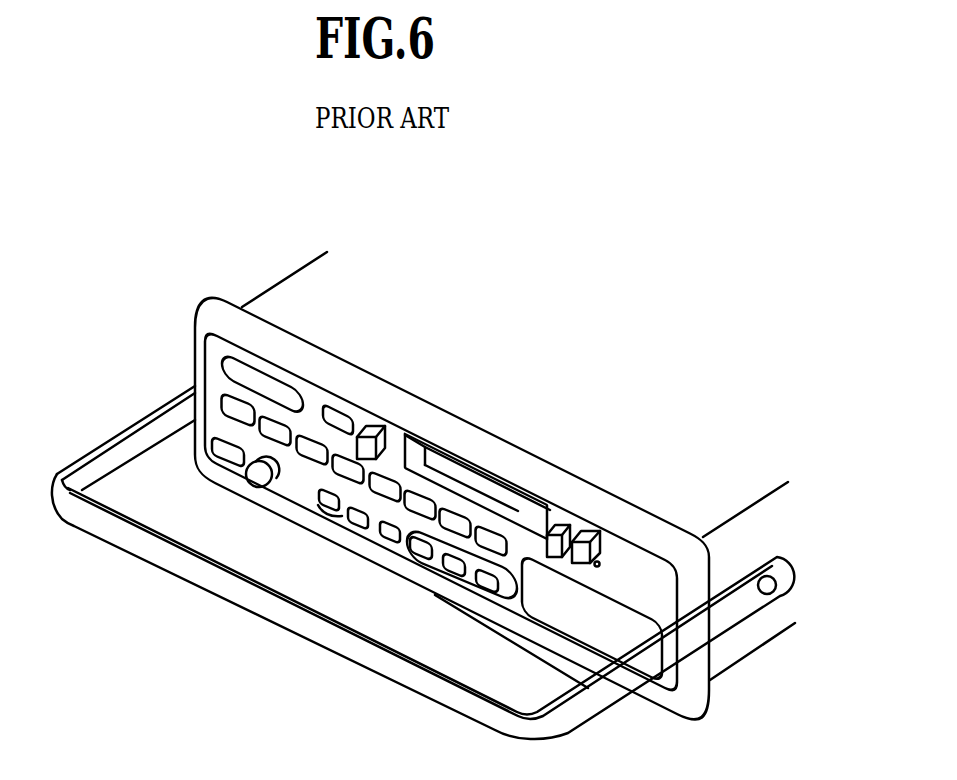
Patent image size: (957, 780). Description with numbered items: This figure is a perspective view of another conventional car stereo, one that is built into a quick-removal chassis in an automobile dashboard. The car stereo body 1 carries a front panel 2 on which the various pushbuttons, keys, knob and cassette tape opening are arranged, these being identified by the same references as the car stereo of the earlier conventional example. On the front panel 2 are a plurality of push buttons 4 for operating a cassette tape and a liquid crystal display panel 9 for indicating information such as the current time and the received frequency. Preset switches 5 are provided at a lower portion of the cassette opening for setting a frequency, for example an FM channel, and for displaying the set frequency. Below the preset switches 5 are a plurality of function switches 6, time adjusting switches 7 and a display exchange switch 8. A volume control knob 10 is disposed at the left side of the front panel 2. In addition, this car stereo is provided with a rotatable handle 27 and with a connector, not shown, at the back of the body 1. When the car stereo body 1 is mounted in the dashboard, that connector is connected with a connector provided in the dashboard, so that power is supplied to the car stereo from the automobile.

The car stereo body 1 is at (567, 347).
The front panel 2 is at (208, 359).
The push buttons 4 is at (365, 424).
The preset switches 5 is at (206, 401).
The function switches 6 is at (357, 530).
The time adjusting switches 7 is at (452, 565).
The display exchange switch 8 is at (488, 588).
The liquid crystal display panel 9 is at (585, 636).
The volume control knob 10 is at (259, 474).
The rotatable handle 27 is at (292, 630).